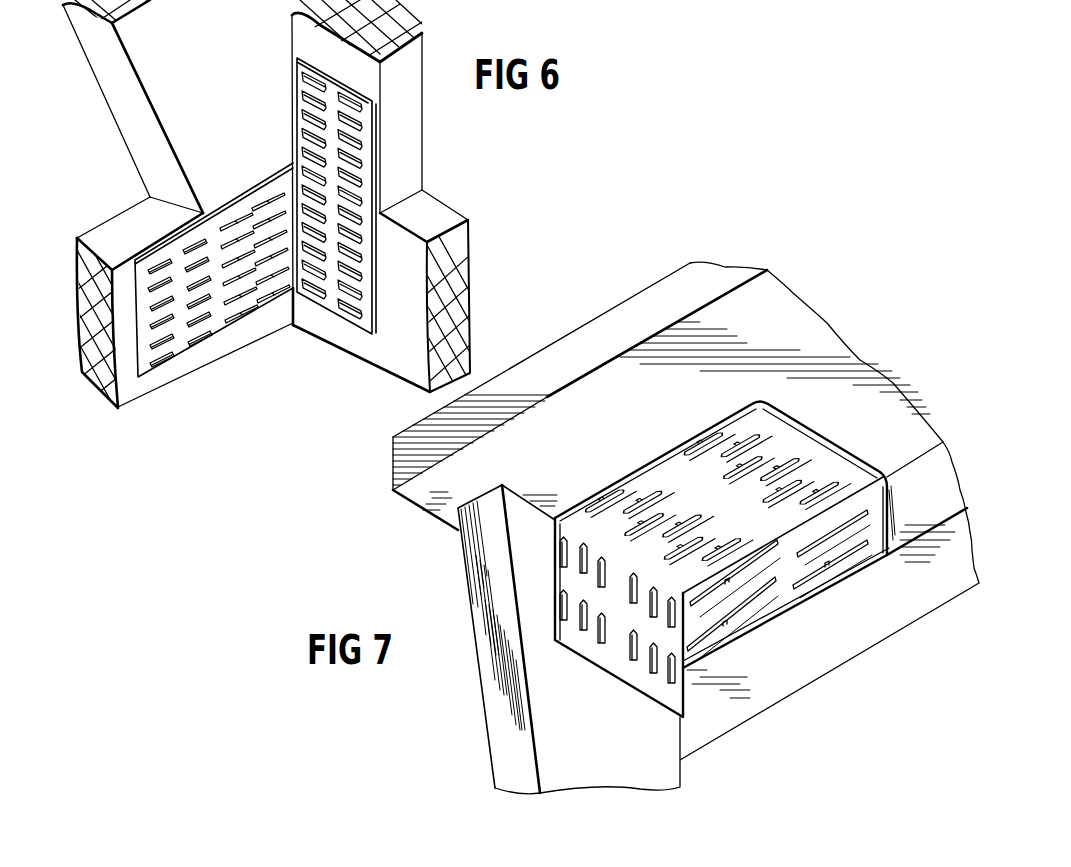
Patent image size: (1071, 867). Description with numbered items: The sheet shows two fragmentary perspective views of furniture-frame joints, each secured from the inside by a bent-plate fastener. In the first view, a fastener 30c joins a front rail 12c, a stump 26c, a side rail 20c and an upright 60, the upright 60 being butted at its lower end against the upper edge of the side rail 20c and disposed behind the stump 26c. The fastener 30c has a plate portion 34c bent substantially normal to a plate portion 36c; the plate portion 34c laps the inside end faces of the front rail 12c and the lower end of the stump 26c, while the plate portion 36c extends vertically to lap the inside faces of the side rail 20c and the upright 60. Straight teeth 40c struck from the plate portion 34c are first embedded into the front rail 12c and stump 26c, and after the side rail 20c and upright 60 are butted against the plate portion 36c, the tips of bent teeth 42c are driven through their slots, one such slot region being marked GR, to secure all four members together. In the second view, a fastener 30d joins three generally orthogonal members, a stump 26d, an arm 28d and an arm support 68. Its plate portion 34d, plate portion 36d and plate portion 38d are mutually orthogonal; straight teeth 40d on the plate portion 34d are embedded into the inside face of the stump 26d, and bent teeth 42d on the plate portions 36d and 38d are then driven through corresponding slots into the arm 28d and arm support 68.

In FIG. 6, the front rail 12c is at (107, 241).
In FIG. 6, the side rail 20c is at (432, 212).
In FIG. 6, the stump 26c is at (116, 84).
In FIG. 6, the fastener 30c is at (255, 249).
In FIG. 6, the plate portion 34c is at (214, 299).
In FIG. 6, the plate portion 36c is at (328, 237).
In FIG. 6, the straight teeth 40c is at (160, 360).
In FIG. 6, the bent teeth 42c is at (257, 203).
In FIG. 6, the upright 60 is at (402, 145).
In FIG. 6, the grille slot GR is at (348, 313).
In FIG. 7, the stump 26d is at (490, 578).
In FIG. 7, the arm 28d is at (600, 337).
In FIG. 7, the fastener 30d is at (743, 568).
In FIG. 7, the plate portion 34d is at (615, 626).
In FIG. 7, the plate portion 36d is at (746, 498).
In FIG. 7, the plate portion 38d is at (803, 593).
In FIG. 7, the straight teeth 40d is at (597, 633).
In FIG. 7, the bent teeth 42d is at (715, 445).
In FIG. 7, the arm support 68 is at (860, 637).